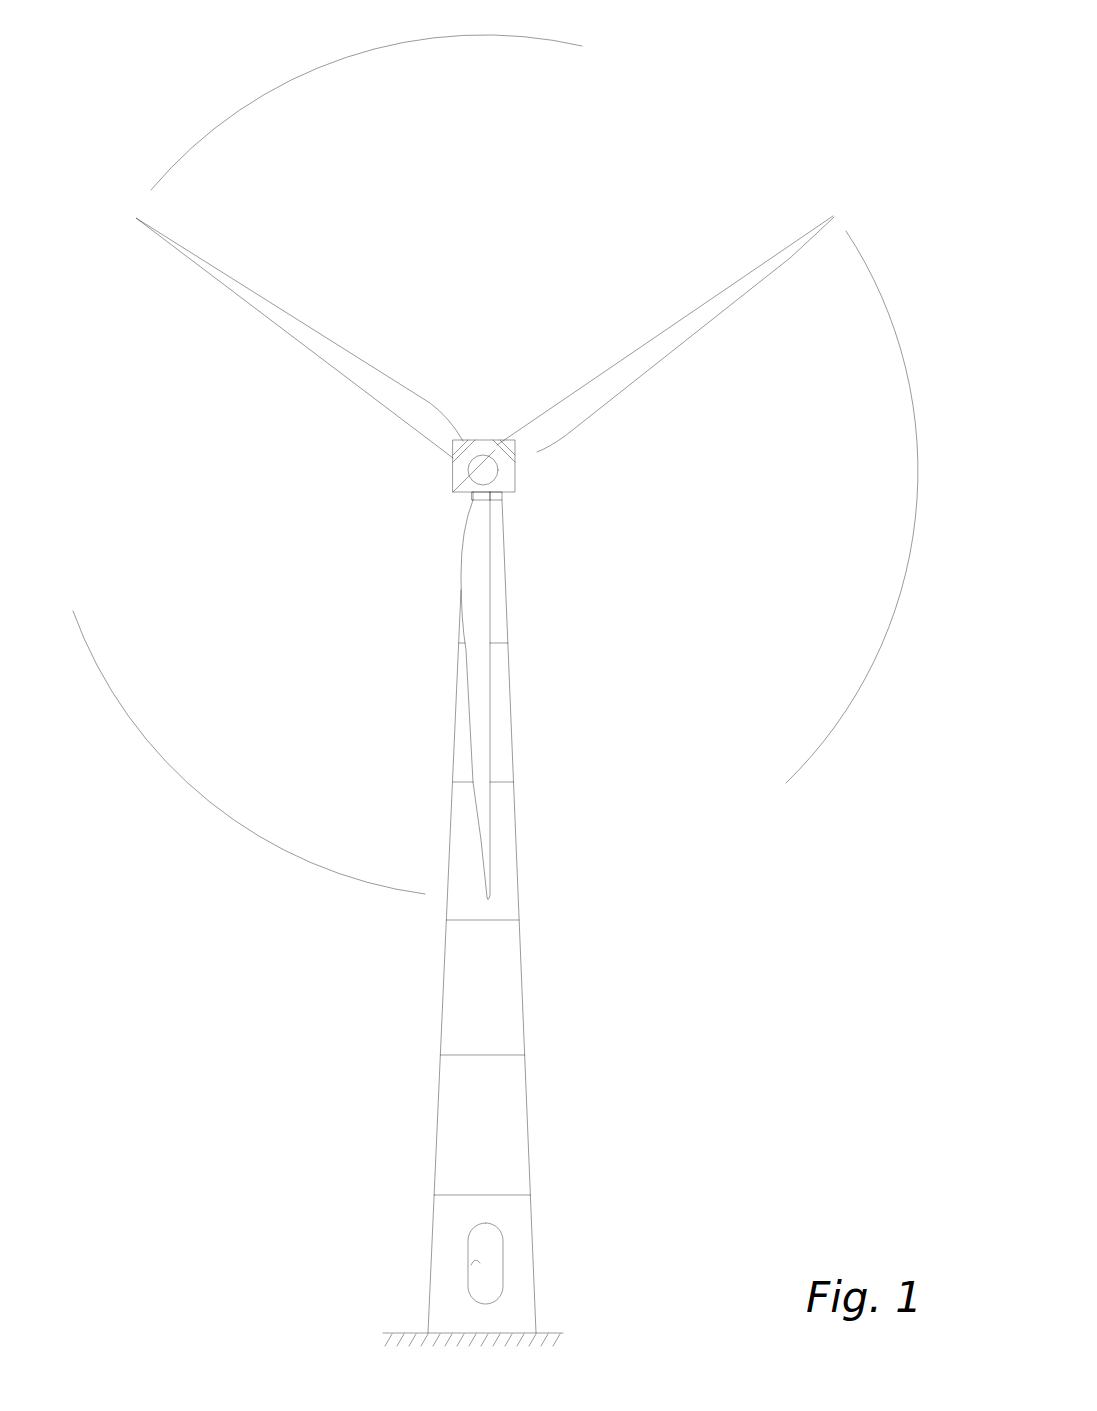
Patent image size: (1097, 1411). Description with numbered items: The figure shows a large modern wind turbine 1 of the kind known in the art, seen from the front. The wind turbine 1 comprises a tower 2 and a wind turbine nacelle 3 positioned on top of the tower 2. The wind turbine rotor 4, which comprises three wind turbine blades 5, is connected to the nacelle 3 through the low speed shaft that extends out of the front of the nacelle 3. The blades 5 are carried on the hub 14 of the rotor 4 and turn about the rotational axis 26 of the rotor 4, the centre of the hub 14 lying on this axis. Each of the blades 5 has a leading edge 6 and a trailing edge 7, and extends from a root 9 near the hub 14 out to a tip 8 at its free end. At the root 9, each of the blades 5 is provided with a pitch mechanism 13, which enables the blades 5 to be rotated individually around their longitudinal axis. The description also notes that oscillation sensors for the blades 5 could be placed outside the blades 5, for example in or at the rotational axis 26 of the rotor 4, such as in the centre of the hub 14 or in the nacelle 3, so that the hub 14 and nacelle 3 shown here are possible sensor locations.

The wind turbine 1 is at (495, 690).
The tower 2 is at (515, 1000).
The wind turbine nacelle 3 is at (515, 493).
The wind turbine rotor 4 is at (452, 463).
The wind turbine blade 5 is at (485, 742).
The leading edge 6 is at (665, 334).
The trailing edge 7 is at (605, 408).
The tip 8 is at (136, 217).
The root 9 is at (515, 475).
The pitch mechanism 13 is at (478, 441).
The hub 14 is at (492, 480).
The rotational axis 26 is at (452, 492).